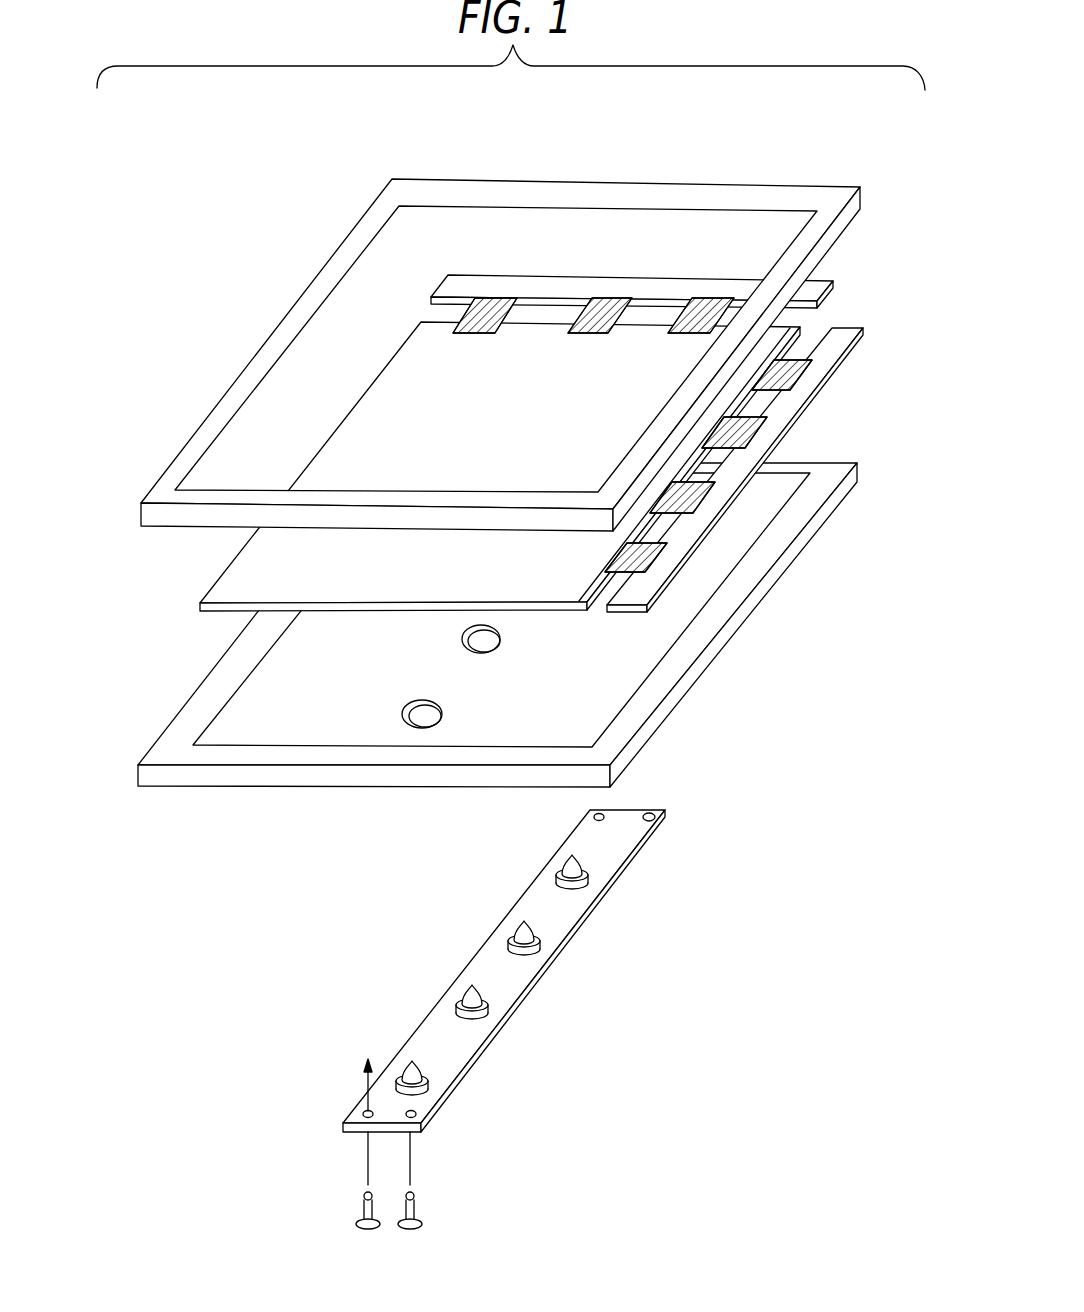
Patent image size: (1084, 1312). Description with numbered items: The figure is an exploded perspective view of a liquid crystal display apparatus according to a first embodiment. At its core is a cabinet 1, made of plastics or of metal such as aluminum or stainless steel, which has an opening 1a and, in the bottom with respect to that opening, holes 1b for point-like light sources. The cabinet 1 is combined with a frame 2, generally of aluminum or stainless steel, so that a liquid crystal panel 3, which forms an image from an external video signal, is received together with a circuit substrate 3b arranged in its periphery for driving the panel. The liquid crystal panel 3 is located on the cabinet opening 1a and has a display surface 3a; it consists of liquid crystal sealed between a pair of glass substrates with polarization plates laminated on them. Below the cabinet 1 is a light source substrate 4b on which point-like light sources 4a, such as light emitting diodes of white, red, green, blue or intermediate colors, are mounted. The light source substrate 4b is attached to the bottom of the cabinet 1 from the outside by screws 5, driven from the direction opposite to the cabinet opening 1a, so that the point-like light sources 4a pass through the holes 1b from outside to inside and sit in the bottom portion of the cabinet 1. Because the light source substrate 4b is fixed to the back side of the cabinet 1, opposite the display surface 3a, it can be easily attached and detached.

The cabinet 1 is at (660, 678).
The opening 1a is at (413, 667).
The holes for point-like light sources 1b is at (403, 722).
The frame 2 is at (810, 192).
The liquid crystal panel 3 is at (262, 565).
The display surface 3a is at (537, 370).
The circuit substrate 3b is at (732, 483).
The point-like light sources 4a is at (446, 1000).
The light source substrate 4b is at (459, 1046).
The screws 5 is at (362, 1208).